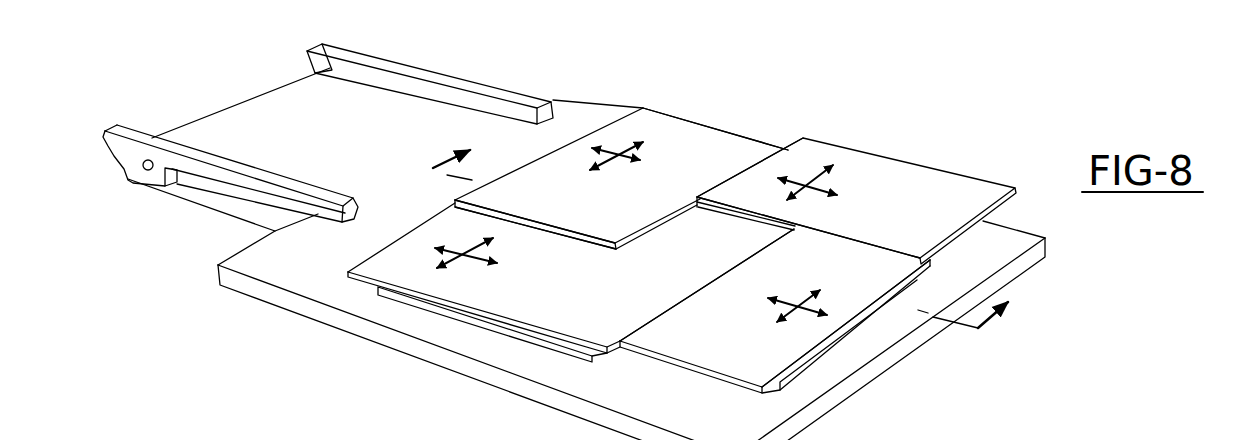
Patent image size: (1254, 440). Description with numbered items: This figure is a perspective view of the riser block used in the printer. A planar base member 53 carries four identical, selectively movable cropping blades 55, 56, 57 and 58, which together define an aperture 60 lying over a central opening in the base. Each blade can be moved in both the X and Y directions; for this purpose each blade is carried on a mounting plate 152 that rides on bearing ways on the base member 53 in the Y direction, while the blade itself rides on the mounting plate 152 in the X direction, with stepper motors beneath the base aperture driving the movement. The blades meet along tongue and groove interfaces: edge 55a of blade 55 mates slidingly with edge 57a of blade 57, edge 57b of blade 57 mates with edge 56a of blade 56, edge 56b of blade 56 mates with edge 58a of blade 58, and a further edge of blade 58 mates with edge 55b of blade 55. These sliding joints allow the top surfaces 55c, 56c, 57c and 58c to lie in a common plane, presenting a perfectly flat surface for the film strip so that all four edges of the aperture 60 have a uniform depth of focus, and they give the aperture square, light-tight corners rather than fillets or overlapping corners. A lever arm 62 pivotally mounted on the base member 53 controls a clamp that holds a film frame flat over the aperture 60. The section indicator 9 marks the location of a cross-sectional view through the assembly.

The section line 9- 9 is at (737, 224).
The base member 53 is at (392, 333).
The cropping blade 55 is at (733, 133).
The edge of plate 55 55a is at (706, 192).
The edge of plate 55 55b is at (512, 219).
The top surface of plate 55 55c is at (629, 219).
The cropping blade 56 is at (775, 311).
The edge of plate 56 56a is at (863, 240).
The edge of plate 56 56b is at (680, 300).
The top surface of plate 56 56c is at (879, 294).
The cropping blade 57 is at (935, 177).
The edge of plate 57 57a is at (768, 156).
The edge of plate 57 57b is at (897, 257).
The top surface of plate 57 57c is at (968, 220).
The cropping blade 58 is at (502, 308).
The edge of plate 58 58a is at (633, 332).
The top surface of plate 58 58c is at (581, 310).
The aperture 60 is at (719, 254).
The lever arm 62 is at (500, 91).
The mounting plate 152 is at (548, 350).